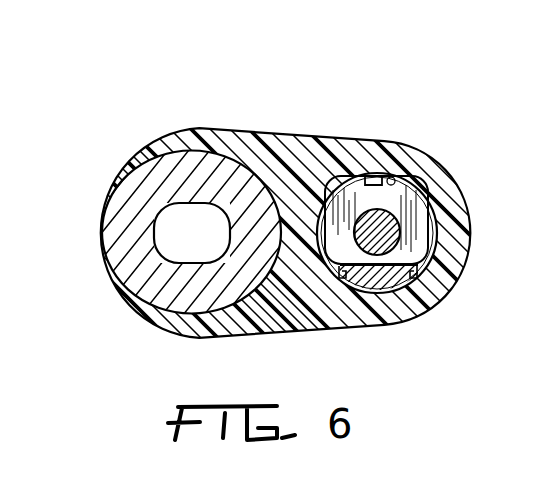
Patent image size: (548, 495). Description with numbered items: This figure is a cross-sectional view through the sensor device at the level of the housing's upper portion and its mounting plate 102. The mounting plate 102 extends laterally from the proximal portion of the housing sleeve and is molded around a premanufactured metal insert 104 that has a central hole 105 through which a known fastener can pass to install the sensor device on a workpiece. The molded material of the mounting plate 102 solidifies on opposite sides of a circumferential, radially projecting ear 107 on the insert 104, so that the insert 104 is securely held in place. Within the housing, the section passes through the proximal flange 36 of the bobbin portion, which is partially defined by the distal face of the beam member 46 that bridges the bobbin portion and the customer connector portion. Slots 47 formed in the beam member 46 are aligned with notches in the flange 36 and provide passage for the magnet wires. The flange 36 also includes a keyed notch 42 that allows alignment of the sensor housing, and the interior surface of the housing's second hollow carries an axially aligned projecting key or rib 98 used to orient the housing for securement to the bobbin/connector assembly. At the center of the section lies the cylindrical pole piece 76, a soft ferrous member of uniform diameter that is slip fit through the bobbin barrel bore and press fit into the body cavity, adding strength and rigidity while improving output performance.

The mounting plate 102 is at (275, 138).
The metal insert 104 is at (193, 190).
The central hole 105 is at (197, 258).
The ear 107 is at (105, 188).
The keyed notch 42 is at (400, 182).
The proximal flange 36 is at (415, 222).
The key or rib 98 is at (373, 173).
The pole piece 76 is at (390, 237).
The beam member 46 is at (378, 285).
The slots 47 is at (413, 271).